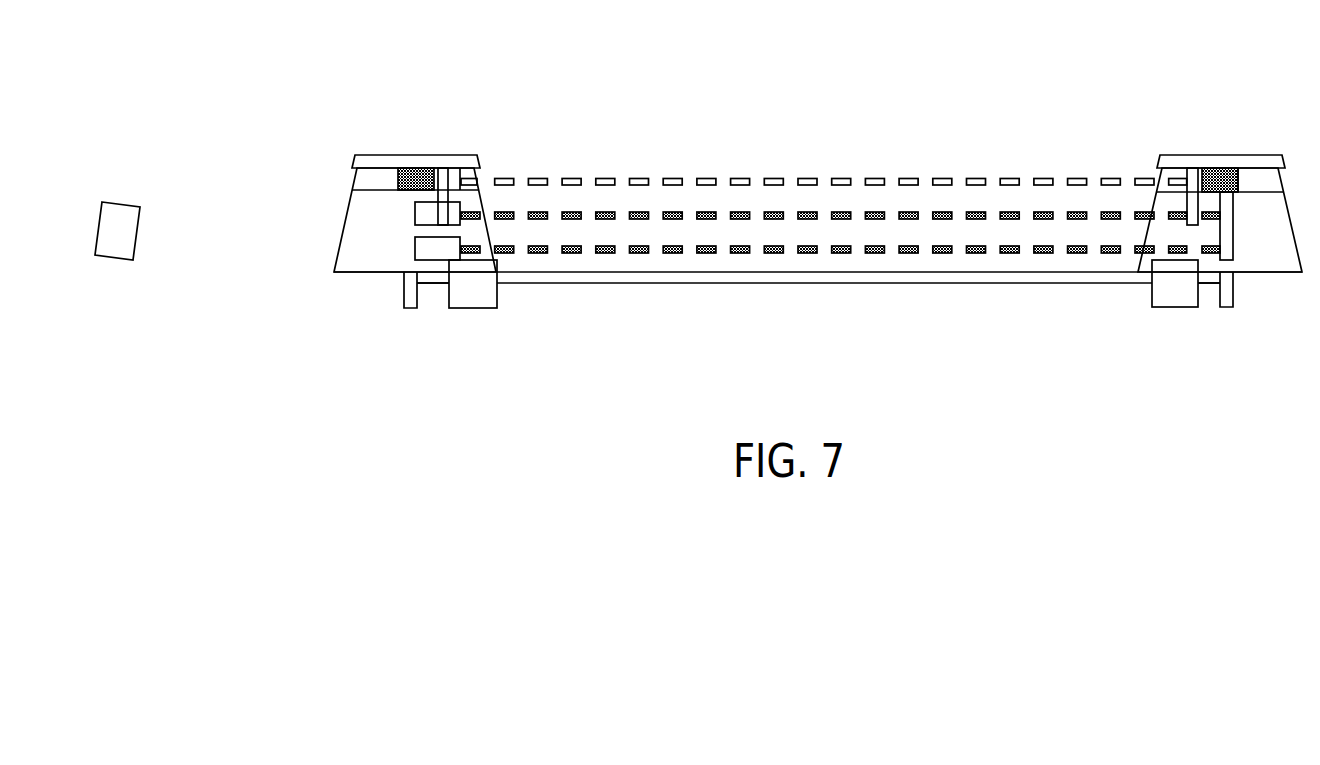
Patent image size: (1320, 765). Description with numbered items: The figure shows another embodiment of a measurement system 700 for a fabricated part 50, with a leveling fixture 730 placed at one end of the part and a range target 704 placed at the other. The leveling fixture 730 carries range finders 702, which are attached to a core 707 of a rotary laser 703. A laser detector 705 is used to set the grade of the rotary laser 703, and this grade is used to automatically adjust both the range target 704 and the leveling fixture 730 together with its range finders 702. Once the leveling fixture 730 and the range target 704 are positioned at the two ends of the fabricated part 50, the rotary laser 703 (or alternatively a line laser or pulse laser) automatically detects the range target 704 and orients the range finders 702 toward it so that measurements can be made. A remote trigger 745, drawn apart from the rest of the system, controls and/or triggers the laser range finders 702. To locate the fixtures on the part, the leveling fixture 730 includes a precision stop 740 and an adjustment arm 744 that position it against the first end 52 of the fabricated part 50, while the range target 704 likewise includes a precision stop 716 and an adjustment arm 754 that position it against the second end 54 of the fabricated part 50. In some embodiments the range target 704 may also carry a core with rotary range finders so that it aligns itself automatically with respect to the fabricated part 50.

The measurement system 700 is at (879, 66).
The leveling fixture 730 is at (456, 119).
The range target 704 is at (1210, 143).
The rotary laser 703 is at (403, 165).
The laser detector 705 is at (447, 184).
The core 707 is at (403, 186).
The range finders 702 is at (427, 249).
The precision stop 740 is at (404, 295).
The first end 52 is at (432, 281).
The adjustment arm 744 is at (477, 295).
The fabricated part 50 is at (812, 277).
The remote trigger 745 is at (120, 247).
The adjustment arm 754 is at (1169, 292).
The second end 54 is at (1210, 278).
The precision stop 716 is at (1227, 292).